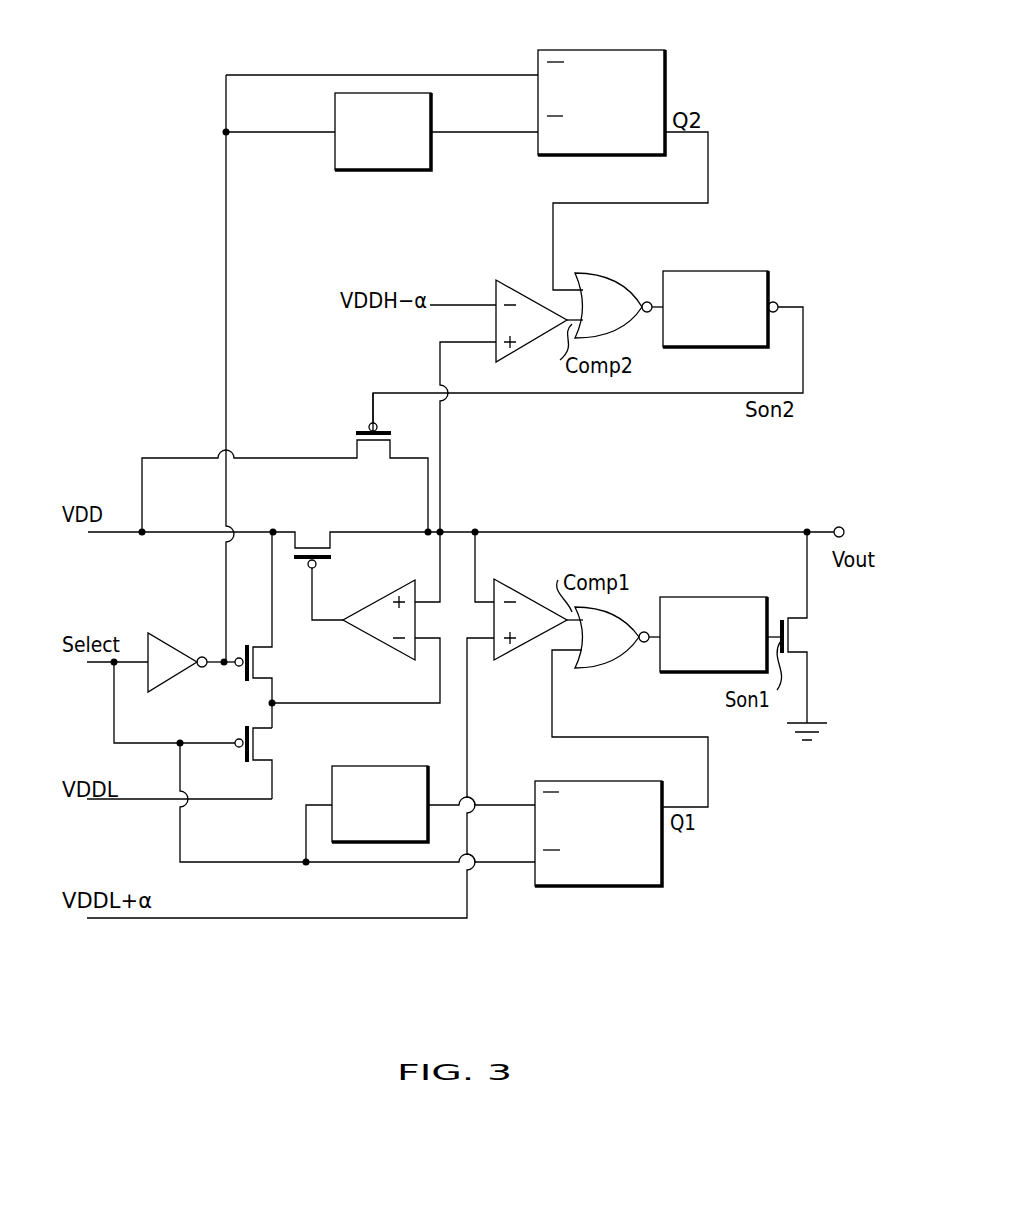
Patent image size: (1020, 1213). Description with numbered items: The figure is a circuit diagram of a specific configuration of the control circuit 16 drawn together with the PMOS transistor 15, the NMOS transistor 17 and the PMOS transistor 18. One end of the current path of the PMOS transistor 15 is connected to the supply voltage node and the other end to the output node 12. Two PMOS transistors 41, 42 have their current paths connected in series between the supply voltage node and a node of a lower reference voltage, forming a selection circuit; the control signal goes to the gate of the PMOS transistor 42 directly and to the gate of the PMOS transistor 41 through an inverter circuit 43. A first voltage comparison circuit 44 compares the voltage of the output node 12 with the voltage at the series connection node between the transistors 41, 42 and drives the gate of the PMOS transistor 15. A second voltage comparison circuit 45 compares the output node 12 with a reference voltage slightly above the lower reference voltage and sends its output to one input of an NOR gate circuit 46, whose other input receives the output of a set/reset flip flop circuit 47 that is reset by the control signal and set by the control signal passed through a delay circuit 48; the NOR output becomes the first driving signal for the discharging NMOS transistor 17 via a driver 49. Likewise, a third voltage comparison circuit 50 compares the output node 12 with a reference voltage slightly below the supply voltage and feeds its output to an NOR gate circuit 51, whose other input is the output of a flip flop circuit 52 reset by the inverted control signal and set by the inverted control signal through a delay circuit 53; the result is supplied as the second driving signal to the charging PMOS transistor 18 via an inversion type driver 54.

The output node 12 is at (840, 526).
The PMOS transistor 15 is at (312, 526).
The control circuit 16 is at (519, 900).
The NMOS transistor 17 is at (812, 636).
The PMOS transistor 18 is at (377, 461).
The PMOS transistor 41 is at (272, 662).
The PMOS transistor 42 is at (272, 742).
The inverter circuit 43 is at (174, 640).
The first voltage comparison circuit 44 is at (378, 598).
The second voltage comparison circuit 45 is at (522, 650).
The NOR gate circuit 46 is at (605, 670).
The flip flop circuit 47 is at (632, 888).
The delay circuit 48 is at (393, 766).
The driver 49 is at (690, 674).
The third voltage comparison circuit 50 is at (521, 292).
The NOR gate circuit 51 is at (606, 272).
The flip flop circuit 52 is at (643, 49).
The delay circuit 53 is at (408, 172).
The inversion type driver 54 is at (696, 270).